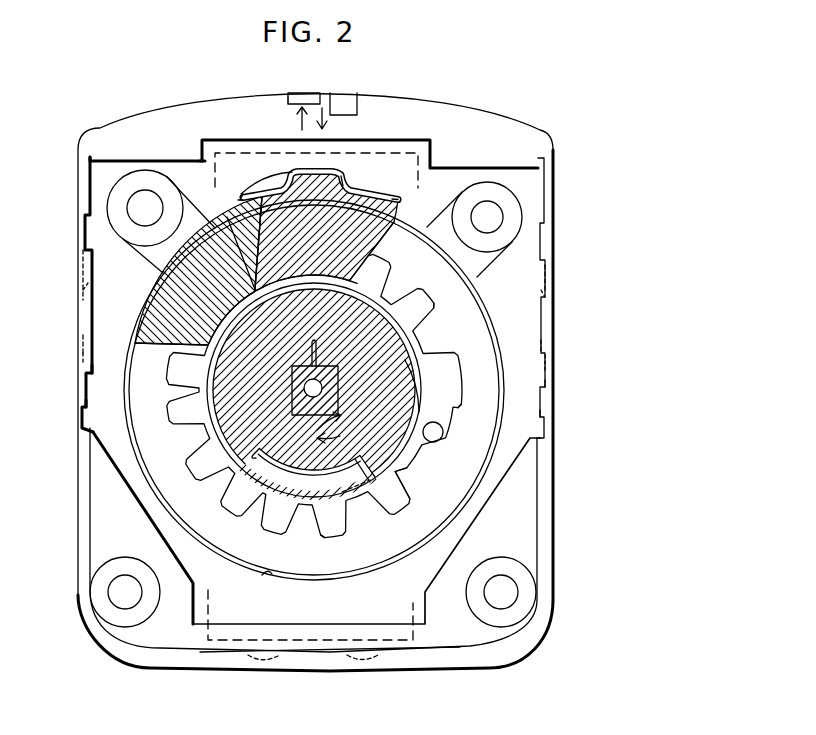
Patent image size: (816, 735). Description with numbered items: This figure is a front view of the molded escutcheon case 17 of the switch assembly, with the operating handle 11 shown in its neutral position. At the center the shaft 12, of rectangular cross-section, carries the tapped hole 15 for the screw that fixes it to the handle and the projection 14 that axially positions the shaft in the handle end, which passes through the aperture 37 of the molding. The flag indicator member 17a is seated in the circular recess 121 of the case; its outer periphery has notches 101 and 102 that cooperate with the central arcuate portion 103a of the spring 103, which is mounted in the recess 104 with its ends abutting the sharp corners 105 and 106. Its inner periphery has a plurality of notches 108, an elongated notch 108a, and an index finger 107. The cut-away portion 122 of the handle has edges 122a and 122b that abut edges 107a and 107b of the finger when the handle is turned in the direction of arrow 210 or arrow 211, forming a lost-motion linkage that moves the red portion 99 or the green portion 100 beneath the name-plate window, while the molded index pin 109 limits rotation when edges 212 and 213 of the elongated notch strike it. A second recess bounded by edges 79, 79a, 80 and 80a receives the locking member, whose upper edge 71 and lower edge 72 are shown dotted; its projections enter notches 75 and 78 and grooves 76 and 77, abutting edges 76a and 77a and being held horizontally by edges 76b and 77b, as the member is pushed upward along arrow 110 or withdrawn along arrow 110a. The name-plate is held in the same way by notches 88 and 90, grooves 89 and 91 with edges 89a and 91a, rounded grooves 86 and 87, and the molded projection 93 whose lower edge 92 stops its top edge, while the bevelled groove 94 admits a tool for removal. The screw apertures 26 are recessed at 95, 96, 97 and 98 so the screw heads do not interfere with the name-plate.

The operating handle 11 is at (314, 391).
The shaft 12 is at (297, 366).
The projection 14 is at (318, 347).
The tapped hole 15 is at (300, 385).
The molded case 17 is at (563, 137).
The flag indicator member 17a is at (314, 390).
The apertures 26 is at (142, 211).
The aperture 37 is at (417, 410).
The upper edge 71 is at (392, 152).
The lower edge 72 is at (326, 642).
The notch 75 is at (541, 412).
The groove 76 is at (546, 380).
The edge 76a is at (546, 347).
The edge 76b is at (548, 360).
The groove 77 is at (85, 370).
The edge 77a is at (83, 338).
The edge 77b is at (82, 359).
The slot 78 is at (85, 400).
The edge 79 is at (170, 160).
The edge 79a is at (240, 143).
The edge 80 is at (177, 553).
The edge 80a is at (276, 623).
The rounded groove 86 is at (368, 660).
The rounded groove 87 is at (262, 670).
The notch 88 is at (540, 233).
The groove 89 is at (546, 277).
The edge 89a is at (546, 294).
The notch 90 is at (87, 226).
The groove 91 is at (83, 267).
The edge 91a is at (80, 291).
The lower edge 92 is at (288, 103).
The molded projection 93 is at (304, 95).
The bevelled groove 94 is at (345, 100).
The recess 95 is at (136, 255).
The recess 96 is at (487, 253).
The recess 97 is at (522, 577).
The recess 98 is at (113, 615).
The portion 99 is at (198, 270).
The portion 100 is at (326, 231).
The notch 101 is at (178, 268).
The notch 102 is at (337, 183).
The spring 103 is at (252, 190).
The central arcuate portion 103a is at (300, 172).
The recess 104 is at (320, 186).
The sharp corner 105 is at (240, 203).
The sharp corner 106 is at (399, 199).
The index finger 107 is at (357, 480).
The edge 107a is at (373, 478).
The edge 107b is at (330, 522).
The notches 108 is at (203, 461).
The elongated notch 108a is at (458, 385).
The molded index pin 109 is at (443, 431).
The arrow 110 is at (300, 121).
The arrow 110a is at (324, 122).
The circular recess 121 is at (266, 576).
The cut-away portion 122 is at (309, 469).
The edge 122a is at (382, 460).
The edge 122b is at (271, 463).
The arrow 210 is at (337, 435).
The arrow 211 is at (350, 423).
The edge 212 is at (433, 343).
The edge 213 is at (403, 508).